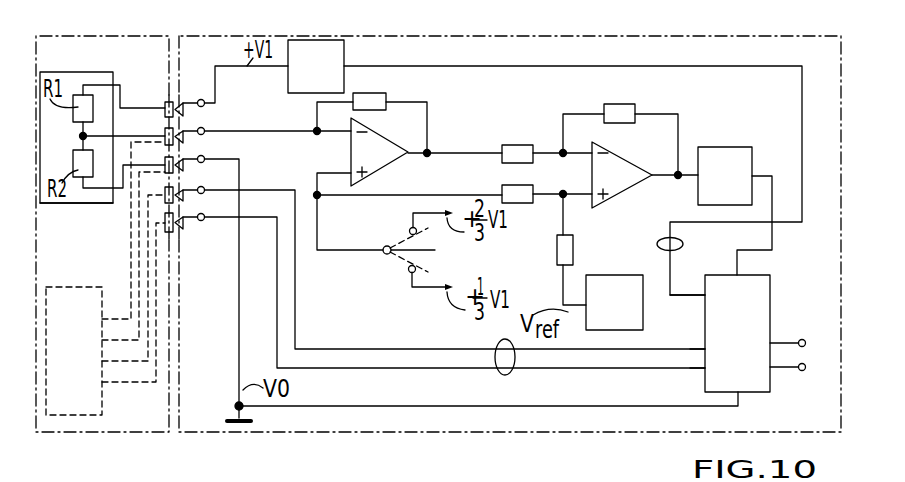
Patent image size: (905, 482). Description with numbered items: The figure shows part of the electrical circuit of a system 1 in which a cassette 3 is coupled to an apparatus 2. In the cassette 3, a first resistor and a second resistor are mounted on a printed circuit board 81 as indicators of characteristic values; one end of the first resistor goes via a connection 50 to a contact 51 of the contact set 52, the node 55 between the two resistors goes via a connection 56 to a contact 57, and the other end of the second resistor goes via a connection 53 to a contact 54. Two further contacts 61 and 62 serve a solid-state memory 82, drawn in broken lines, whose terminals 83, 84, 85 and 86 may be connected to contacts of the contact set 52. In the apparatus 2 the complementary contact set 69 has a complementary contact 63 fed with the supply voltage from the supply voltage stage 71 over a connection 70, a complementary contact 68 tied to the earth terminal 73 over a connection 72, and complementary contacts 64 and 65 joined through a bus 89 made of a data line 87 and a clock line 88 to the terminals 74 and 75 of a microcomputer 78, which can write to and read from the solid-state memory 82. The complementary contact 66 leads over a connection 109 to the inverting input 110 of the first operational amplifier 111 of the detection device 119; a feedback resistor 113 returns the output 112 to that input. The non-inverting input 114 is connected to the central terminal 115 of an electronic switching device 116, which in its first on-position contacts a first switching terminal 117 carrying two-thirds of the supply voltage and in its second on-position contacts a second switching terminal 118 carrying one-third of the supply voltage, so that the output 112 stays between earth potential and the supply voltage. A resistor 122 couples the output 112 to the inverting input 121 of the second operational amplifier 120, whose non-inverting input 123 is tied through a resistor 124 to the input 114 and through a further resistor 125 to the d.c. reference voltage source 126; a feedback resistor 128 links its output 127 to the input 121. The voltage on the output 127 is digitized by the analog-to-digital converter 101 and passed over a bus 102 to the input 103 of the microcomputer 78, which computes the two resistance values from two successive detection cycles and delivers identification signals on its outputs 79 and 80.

The system 1 is at (173, 27).
The apparatus 2 is at (560, 35).
The cassette 3 is at (97, 28).
The connection 50 is at (113, 72).
The contact 51 is at (164, 106).
The contact set 52 is at (161, 99).
The connection 53 is at (95, 190).
The contact 54 is at (164, 166).
The node 55 is at (80, 137).
The connection 56 is at (104, 86).
The contact 57 is at (164, 137).
The contact 61 is at (164, 202).
The contact 62 is at (164, 229).
The complementary contact 63 is at (190, 111).
The complementary contact 64 is at (188, 197).
The complementary contact 65 is at (188, 226).
The complementary contact 66 is at (190, 139).
The complementary contact 68 is at (188, 168).
The complementary contact set 69 is at (200, 98).
The connection 70 is at (215, 85).
The supply voltage stage 71 is at (338, 57).
The connection 72 is at (239, 332).
The earth terminal 73 is at (237, 406).
The terminal 74 is at (707, 348).
The terminal 75 is at (707, 368).
The microcomputer 78 is at (758, 388).
The output 79 is at (802, 339).
The output 80 is at (806, 371).
The printed circuit board 81 is at (74, 202).
The solid-state memory 82 is at (102, 412).
The terminal 83 is at (102, 319).
The terminal 84 is at (102, 361).
The terminal 85 is at (102, 382).
The terminal 86 is at (102, 340).
The data line 87 is at (433, 349).
The clock line 88 is at (375, 370).
The bus 89 is at (508, 373).
The analog-to-digital converter 101 is at (725, 157).
The bus 102 is at (683, 243).
The input 103 is at (707, 294).
The connection 109 is at (263, 131).
The inverting input 110 is at (350, 136).
The first operational amplifier 111 is at (378, 143).
The output 112 is at (429, 152).
The feedback resistor 113 is at (373, 100).
The non-inverting input 114 is at (345, 172).
The central terminal 115 is at (383, 253).
The electronic switching device 116 is at (449, 258).
The first switching terminal 117 is at (410, 229).
The second switching terminal 118 is at (409, 271).
The detection device 119 is at (715, 100).
The second operational amplifier 120 is at (627, 163).
The inverting input 121 is at (590, 153).
The resistor 122 is at (528, 144).
The non-inverting input 123 is at (588, 198).
The resistor 124 is at (502, 187).
The further resistor 125 is at (559, 247).
The d.c. reference voltage source 126 is at (612, 287).
The output 127 is at (653, 177).
The feedback resistor 128 is at (622, 108).